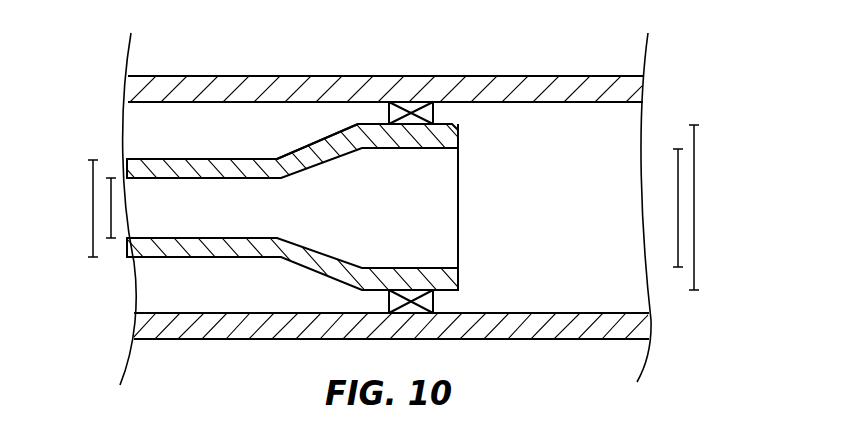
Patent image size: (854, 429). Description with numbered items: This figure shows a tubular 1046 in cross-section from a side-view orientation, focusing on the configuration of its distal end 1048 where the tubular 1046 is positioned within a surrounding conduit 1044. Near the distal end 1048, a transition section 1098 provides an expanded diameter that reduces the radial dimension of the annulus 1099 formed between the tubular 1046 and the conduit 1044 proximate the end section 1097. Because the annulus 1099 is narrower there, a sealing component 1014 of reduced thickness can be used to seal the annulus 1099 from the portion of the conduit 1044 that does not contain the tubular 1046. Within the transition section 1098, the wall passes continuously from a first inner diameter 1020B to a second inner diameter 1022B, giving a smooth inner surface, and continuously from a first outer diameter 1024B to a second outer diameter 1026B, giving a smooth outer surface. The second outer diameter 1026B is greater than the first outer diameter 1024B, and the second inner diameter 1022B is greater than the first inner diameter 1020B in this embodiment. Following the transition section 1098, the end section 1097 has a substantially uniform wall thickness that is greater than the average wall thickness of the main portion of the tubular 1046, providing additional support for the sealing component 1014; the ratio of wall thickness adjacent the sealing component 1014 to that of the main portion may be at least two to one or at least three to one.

The conduit 1044 is at (292, 84).
The tubular 1046 is at (197, 159).
The distal end 1048 is at (449, 158).
The sealing component 1014 is at (386, 118).
The end section 1097 is at (442, 118).
The transition section 1098 is at (292, 135).
The annulus 1099 is at (182, 139).
The first inner diameter 1020B is at (111, 202).
The first outer diameter 1024B is at (93, 247).
The second inner diameter 1022B is at (732, 165).
The second outer diameter 1026B is at (732, 243).